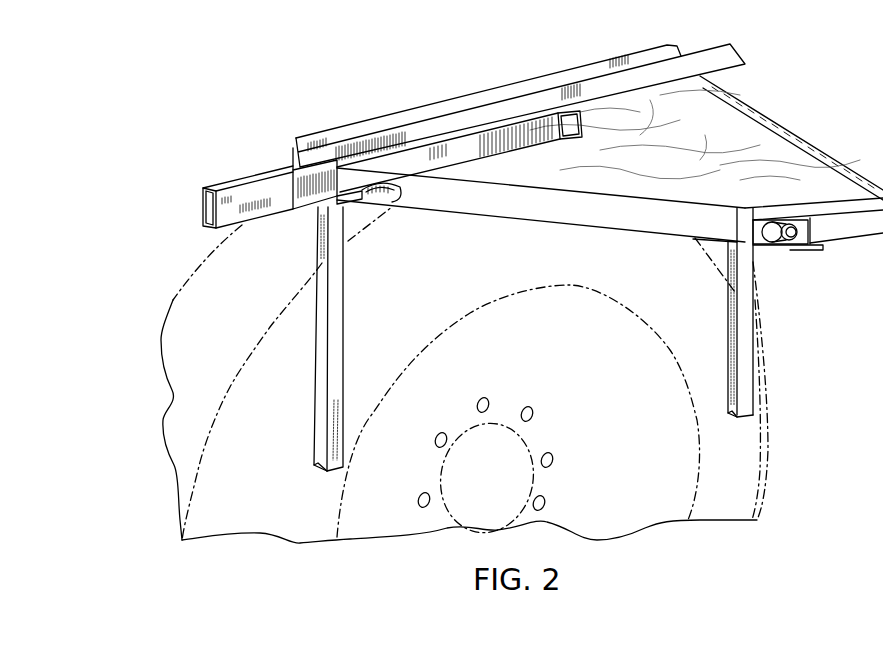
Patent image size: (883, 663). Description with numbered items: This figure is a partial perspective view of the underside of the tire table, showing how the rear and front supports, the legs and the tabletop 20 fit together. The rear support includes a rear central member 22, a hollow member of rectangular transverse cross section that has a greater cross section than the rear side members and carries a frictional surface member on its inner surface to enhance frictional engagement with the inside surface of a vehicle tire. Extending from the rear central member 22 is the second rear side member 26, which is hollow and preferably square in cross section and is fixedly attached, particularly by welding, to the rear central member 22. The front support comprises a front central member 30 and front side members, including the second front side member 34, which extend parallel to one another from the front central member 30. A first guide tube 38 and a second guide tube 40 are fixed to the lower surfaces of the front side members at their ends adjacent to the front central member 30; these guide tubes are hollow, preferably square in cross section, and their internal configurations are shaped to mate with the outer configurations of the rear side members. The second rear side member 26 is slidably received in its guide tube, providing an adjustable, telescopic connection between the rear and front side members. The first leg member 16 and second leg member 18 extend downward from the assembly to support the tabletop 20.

The first leg member 16 is at (747, 293).
The second leg member 18 is at (320, 388).
The tabletop 20 is at (723, 144).
The rear central member 22 is at (237, 190).
The second rear side member 26 is at (482, 143).
The front central member 30 is at (690, 218).
The second front side member 34 is at (718, 55).
The first guide tube 38 is at (310, 182).
The second guide tube 40 is at (813, 247).